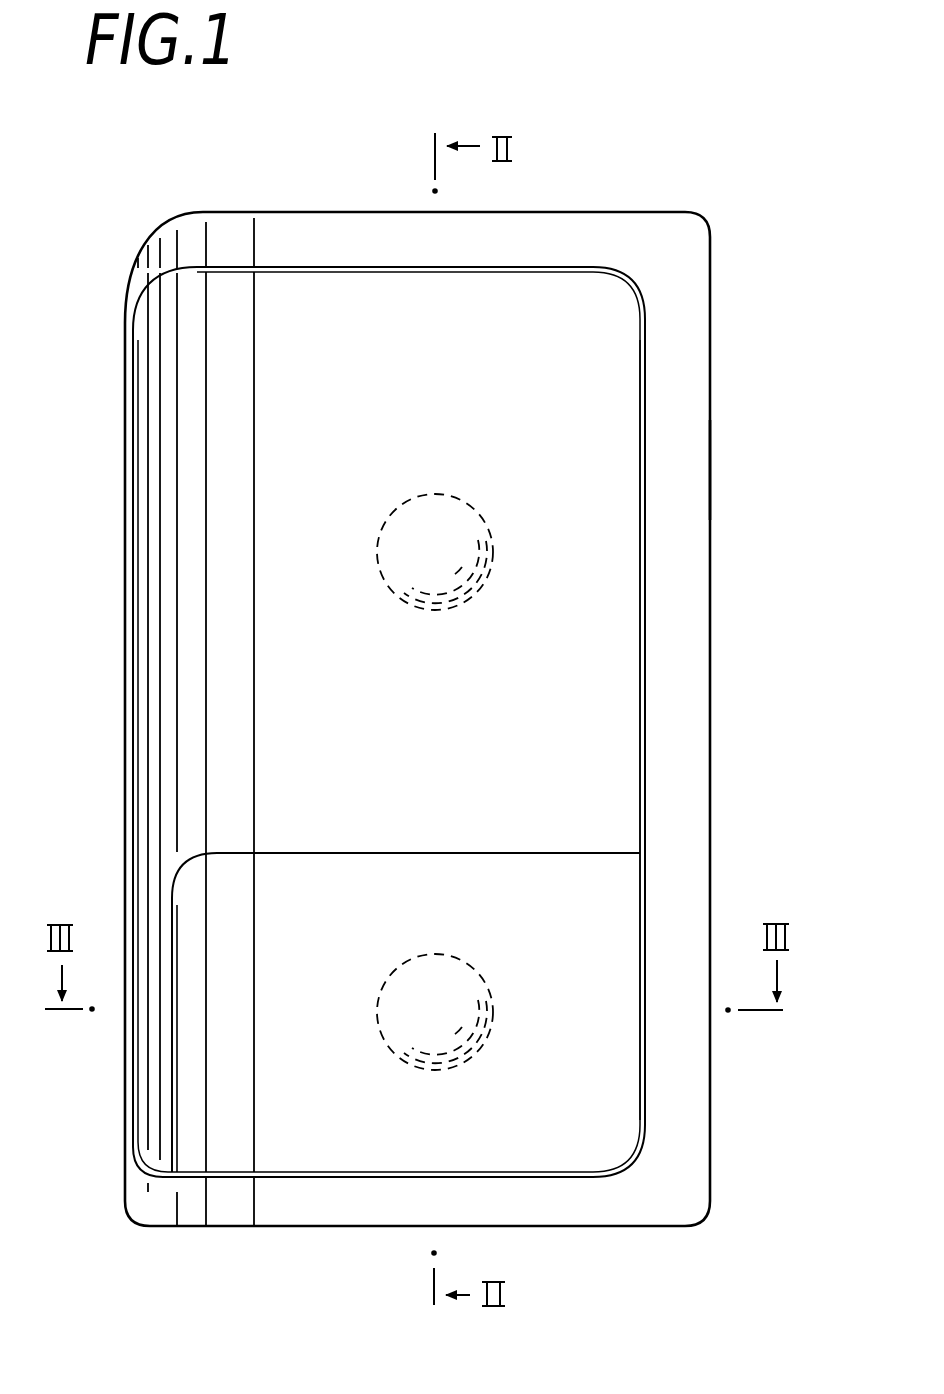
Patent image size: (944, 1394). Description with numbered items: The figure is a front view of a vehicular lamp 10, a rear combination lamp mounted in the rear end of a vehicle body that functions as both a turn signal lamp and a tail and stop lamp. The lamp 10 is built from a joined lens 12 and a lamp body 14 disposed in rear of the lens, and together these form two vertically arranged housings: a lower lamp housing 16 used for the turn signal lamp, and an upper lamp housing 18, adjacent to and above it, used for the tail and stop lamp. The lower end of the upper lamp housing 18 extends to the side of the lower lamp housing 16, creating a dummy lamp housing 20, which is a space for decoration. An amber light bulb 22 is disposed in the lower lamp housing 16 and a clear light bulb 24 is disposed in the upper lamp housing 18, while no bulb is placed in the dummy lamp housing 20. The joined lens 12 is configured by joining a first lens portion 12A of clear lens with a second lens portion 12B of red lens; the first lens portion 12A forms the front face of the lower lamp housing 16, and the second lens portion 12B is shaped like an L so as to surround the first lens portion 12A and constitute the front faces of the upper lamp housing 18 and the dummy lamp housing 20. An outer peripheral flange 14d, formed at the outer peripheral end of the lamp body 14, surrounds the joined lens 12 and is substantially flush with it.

The lamp 10 is at (749, 386).
The joined lens 12 is at (787, 740).
The first lens portion 12A is at (617, 895).
The second lens portion 12B is at (605, 755).
The lamp body 14 is at (720, 653).
The outer peripheral flange 14d is at (695, 470).
The lower lamp housing 16 is at (608, 1055).
The upper lamp housing 18 is at (612, 557).
The dummy lamp housing 20 is at (150, 1069).
The light bulb 22 is at (463, 957).
The light bulb 24 is at (470, 508).